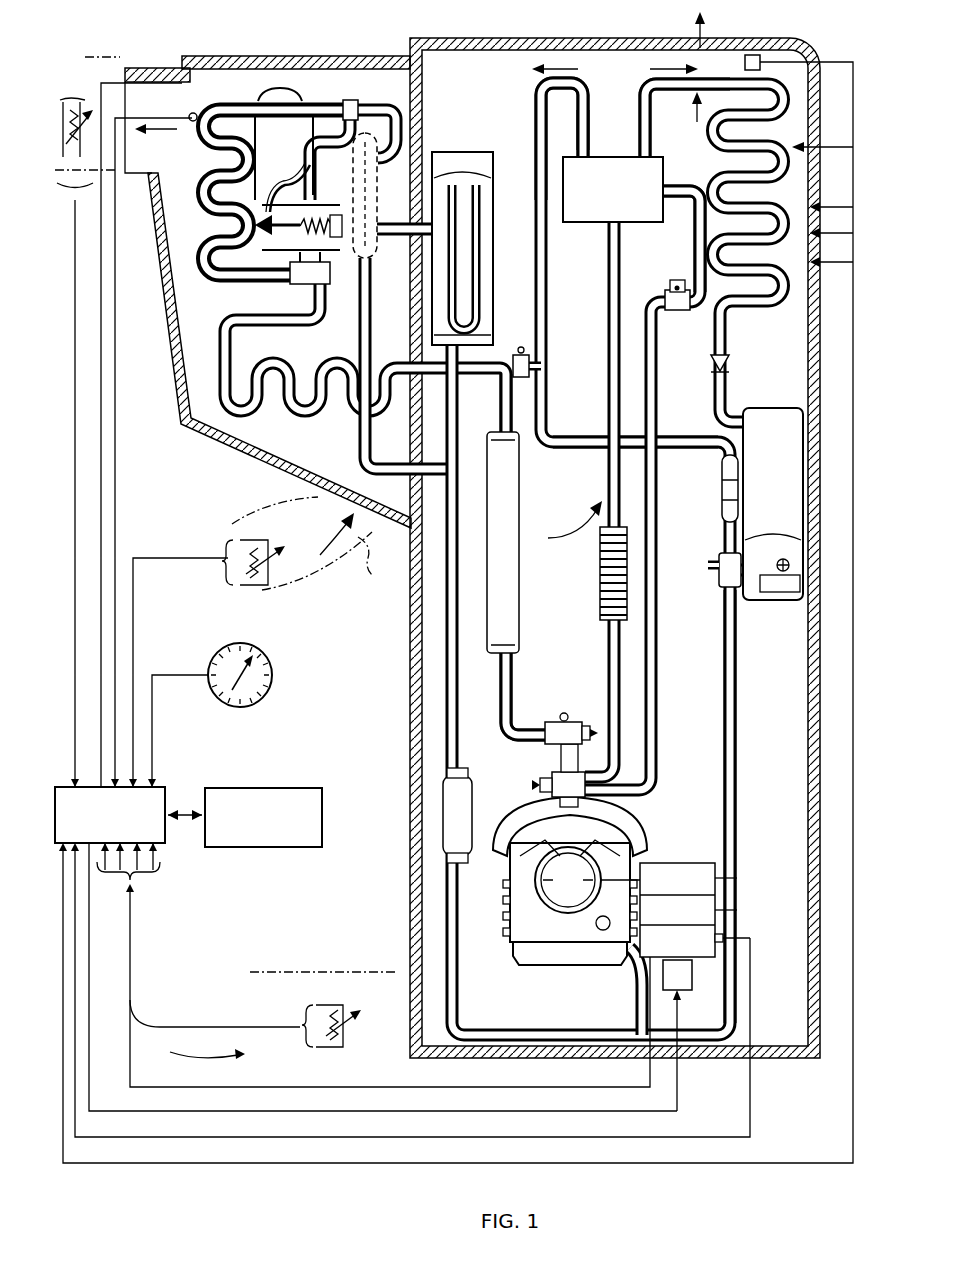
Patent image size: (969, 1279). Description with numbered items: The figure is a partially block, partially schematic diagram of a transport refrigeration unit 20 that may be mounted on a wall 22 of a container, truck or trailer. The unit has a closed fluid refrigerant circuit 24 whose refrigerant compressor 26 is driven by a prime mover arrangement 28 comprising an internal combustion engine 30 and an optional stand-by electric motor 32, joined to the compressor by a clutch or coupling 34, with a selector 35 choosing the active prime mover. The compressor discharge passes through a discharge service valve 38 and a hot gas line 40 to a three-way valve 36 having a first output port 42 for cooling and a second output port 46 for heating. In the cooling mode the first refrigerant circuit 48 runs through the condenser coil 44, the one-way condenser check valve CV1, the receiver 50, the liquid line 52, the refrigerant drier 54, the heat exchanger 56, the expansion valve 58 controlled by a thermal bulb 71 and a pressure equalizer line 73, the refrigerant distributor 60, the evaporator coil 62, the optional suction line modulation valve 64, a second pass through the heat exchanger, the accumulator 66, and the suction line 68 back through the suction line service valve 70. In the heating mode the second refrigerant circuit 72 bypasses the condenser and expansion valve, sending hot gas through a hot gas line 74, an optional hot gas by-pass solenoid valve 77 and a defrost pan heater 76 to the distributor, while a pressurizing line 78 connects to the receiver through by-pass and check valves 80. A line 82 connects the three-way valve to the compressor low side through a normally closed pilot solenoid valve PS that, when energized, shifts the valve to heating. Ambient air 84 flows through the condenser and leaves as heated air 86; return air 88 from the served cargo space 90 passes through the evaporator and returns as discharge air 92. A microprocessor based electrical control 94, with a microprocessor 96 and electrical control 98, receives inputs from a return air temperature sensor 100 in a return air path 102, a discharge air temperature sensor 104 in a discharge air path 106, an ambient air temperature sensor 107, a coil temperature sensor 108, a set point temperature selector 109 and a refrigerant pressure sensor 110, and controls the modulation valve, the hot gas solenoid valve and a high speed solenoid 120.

The transport refrigeration unit 20 is at (458, 631).
The wall 22 is at (422, 105).
The closed fluid refrigerant circuit 24 is at (564, 519).
The refrigerant compressor 26 is at (510, 925).
The prime mover arrangement 28 is at (655, 863).
The internal combustion engine 30 is at (632, 965).
The stand-by electric motor 32 is at (730, 878).
The clutch or coupling 34 is at (730, 910).
The selector 35 is at (730, 938).
The three-way valve 36 is at (612, 157).
The discharge service valve 38 is at (550, 780).
The hot gas line 40 is at (608, 460).
The first output port 42 is at (660, 157).
The condenser coil 44 is at (780, 252).
The second output port 46 is at (562, 158).
The first refrigerant circuit 48 is at (660, 69).
The receiver 50 is at (770, 598).
The liquid line 52 is at (737, 705).
The refrigerant drier 54 is at (445, 800).
The heat exchanger 56 is at (372, 258).
The expansion valve 58 is at (290, 285).
The refrigerant distributor 60 is at (371, 292).
The evaporator coil 62 is at (200, 220).
The controllable suction line modulation valve 64 is at (355, 100).
The accumulator 66 is at (450, 152).
The suction line 68 is at (500, 408).
The suction line service valve 70 is at (562, 720).
The thermal bulb 71 is at (283, 88).
The second refrigerant circuit 72 is at (568, 70).
The pressure equalizer line 73 is at (296, 172).
The hot gas line 74 is at (547, 285).
The defrost pan heater 76 is at (283, 413).
The hot gas by-pass solenoid valve 77 is at (530, 362).
The by-pass or pressurizing line 78 is at (592, 440).
The by-pass and check valves 80 is at (722, 500).
The conduit or line 82 is at (655, 525).
The ambient air 84 is at (818, 207).
The heated air 86 is at (700, 30).
The return air 88 is at (325, 548).
The served cargo space 90 is at (268, 292).
The discharge air 92 is at (160, 133).
The microprocessor based electrical control 94 is at (162, 868).
The microprocessor 96 is at (168, 795).
The electrical control 98 is at (276, 788).
The return air temperature sensor 100 is at (268, 588).
The return air path 102 is at (370, 563).
The discharge air temperature sensor 104 is at (92, 108).
The discharge air path 106 is at (58, 100).
The ambient air temperature sensor 107 is at (350, 1030).
The coil temperature sensor 108 is at (193, 113).
The set point temperature selector 109 is at (270, 695).
The refrigerant pressure sensor (HPCO) 110 is at (750, 55).
The throttle or high speed solenoid 120 is at (682, 992).
The pilot solenoid valve PS is at (668, 290).
The one-way condenser check valve CV1 is at (710, 365).